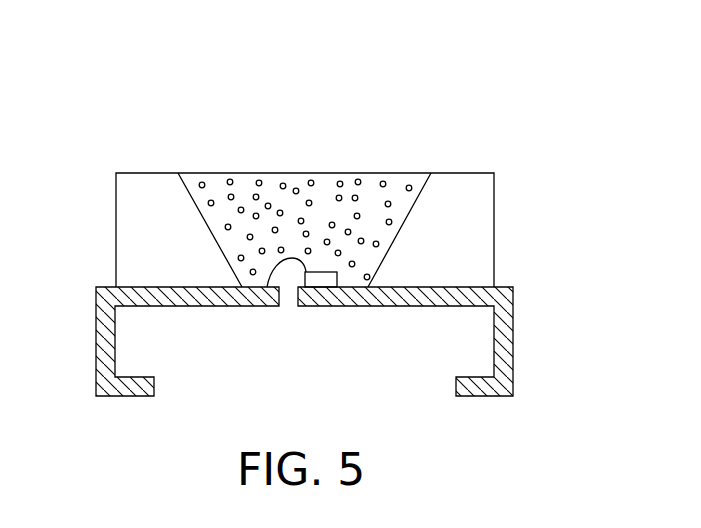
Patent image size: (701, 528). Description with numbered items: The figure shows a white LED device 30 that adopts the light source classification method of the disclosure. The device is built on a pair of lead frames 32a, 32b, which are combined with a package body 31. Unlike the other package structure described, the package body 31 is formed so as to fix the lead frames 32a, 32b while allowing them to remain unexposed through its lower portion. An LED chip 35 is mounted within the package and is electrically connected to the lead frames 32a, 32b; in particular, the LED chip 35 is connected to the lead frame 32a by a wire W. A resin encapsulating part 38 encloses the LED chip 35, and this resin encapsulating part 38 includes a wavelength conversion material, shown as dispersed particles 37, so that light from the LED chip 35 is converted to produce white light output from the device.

The white LED device 30 is at (467, 41).
The package body 31 is at (123, 233).
The lead frame 32a is at (98, 352).
The lead frame 32b is at (512, 345).
The LED chip 35 is at (330, 278).
The phosphor particles 37 is at (323, 189).
The resin encapsulating part 38 is at (215, 180).
The wire W is at (293, 258).